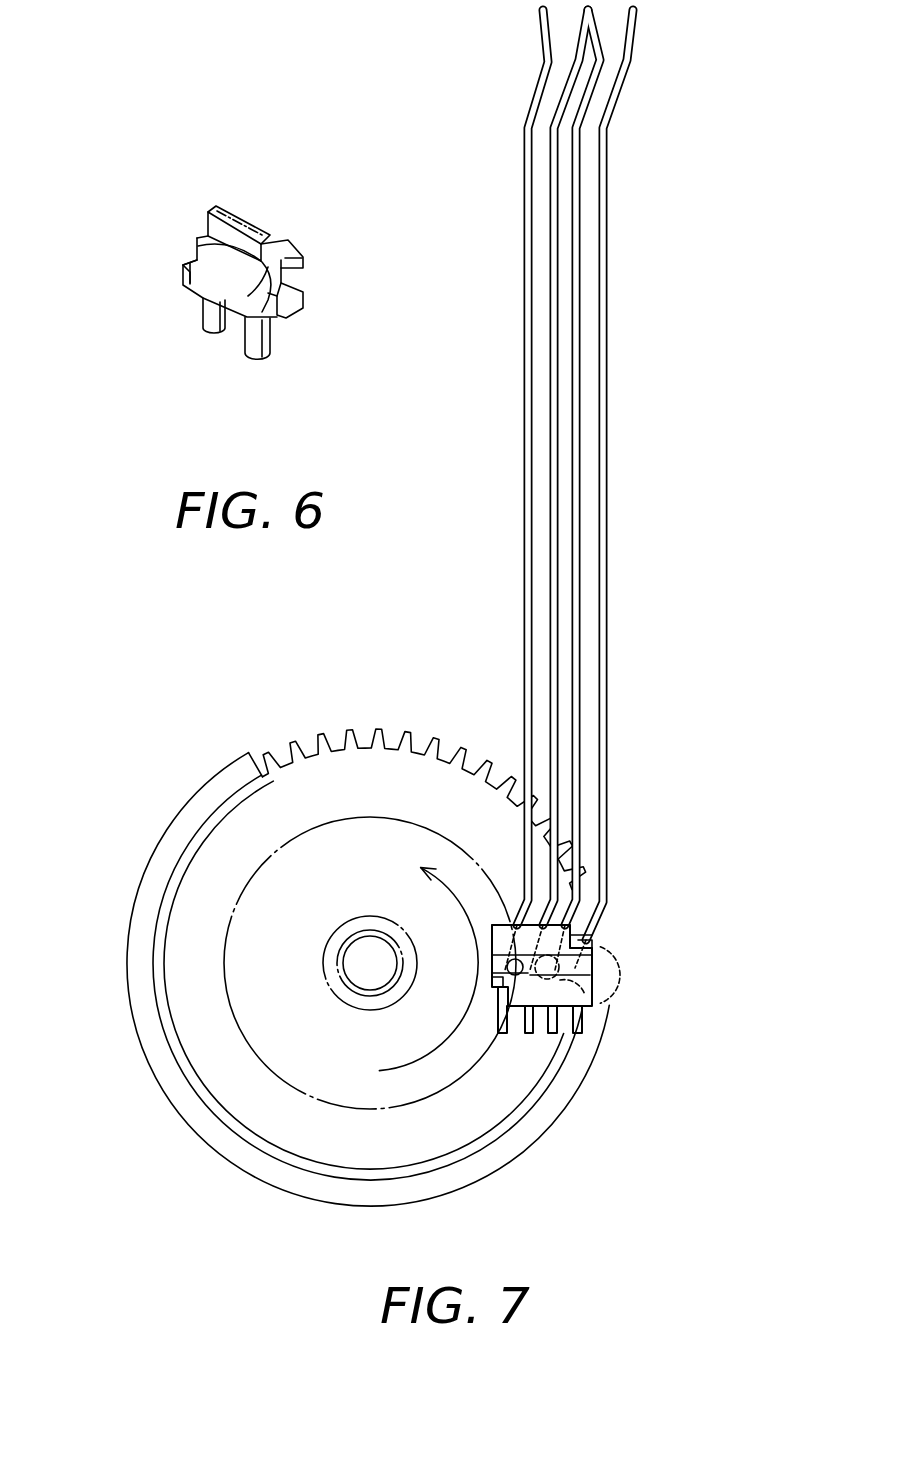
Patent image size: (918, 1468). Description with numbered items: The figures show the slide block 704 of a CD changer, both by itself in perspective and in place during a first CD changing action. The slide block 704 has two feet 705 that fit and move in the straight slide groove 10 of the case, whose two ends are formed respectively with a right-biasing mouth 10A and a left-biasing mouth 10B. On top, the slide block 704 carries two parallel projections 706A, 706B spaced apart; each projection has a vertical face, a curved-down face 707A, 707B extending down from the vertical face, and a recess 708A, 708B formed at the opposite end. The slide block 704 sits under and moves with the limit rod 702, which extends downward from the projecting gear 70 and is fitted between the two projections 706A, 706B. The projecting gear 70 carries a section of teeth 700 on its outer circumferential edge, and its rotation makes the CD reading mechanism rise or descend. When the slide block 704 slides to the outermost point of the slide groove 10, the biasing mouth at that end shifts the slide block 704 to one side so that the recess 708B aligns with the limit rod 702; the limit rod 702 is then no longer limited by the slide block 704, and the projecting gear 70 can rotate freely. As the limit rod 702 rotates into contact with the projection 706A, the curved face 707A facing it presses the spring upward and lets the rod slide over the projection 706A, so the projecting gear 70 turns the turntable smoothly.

In FIG. 7, the straight slide groove 10 is at (633, 475).
In FIG. 7, the right-biasing mouth 10A is at (613, 58).
In FIG. 7, the left-biasing mouth 10B is at (543, 1022).
In FIG. 7, the projecting gear 70 is at (193, 1052).
In FIG. 7, the section of teeth 700 is at (305, 753).
In FIG. 7, the limit rod 702 is at (603, 1000).
In FIG. 6, the slide block 704 is at (181, 252).
In FIG. 7, the slide block 704 is at (613, 958).
In FIG. 6, the feet 705 is at (210, 332).
In FIG. 6, the projection 706A is at (148, 303).
In FIG. 7, the projection 706A is at (671, 1061).
In FIG. 6, the curved-down face 707A is at (220, 277).
In FIG. 7, the curved-down face 707A is at (570, 1025).
In FIG. 6, the projection 706B is at (311, 200).
In FIG. 7, the projection 706B is at (660, 883).
In FIG. 6, the curved-down face 707B is at (257, 220).
In FIG. 7, the curved-down face 707B is at (517, 923).
In FIG. 6, the recess 708A is at (187, 263).
In FIG. 7, the recess 708A is at (515, 1027).
In FIG. 6, the recess 708B is at (290, 258).
In FIG. 7, the recess 708B is at (567, 942).